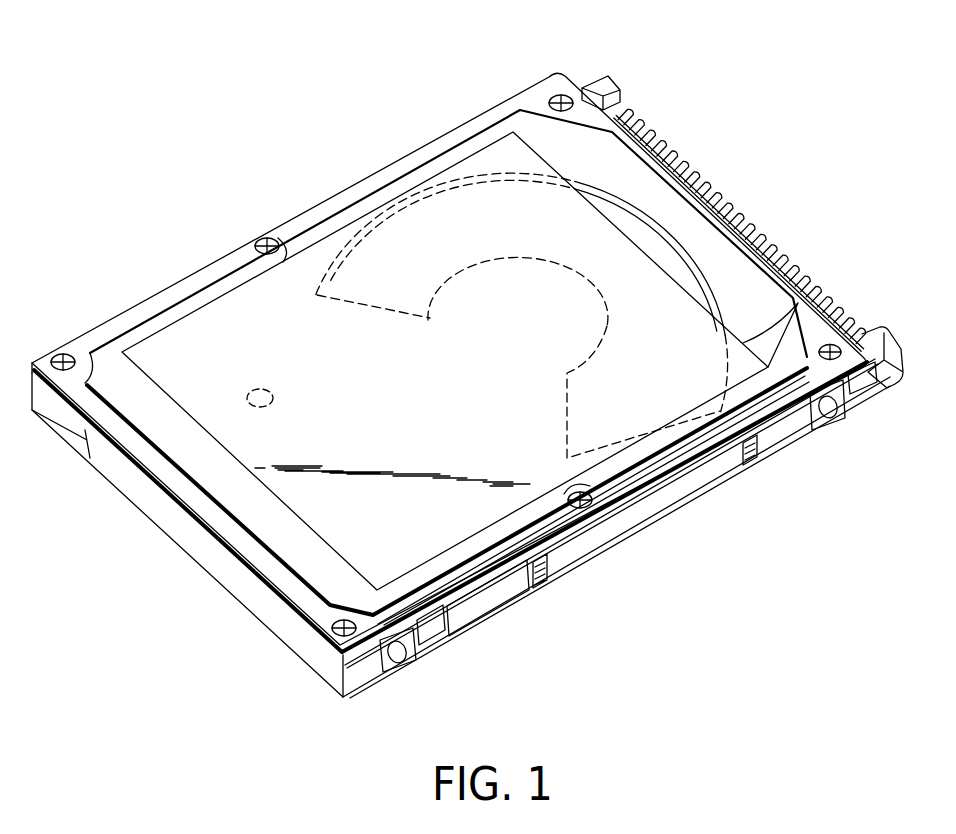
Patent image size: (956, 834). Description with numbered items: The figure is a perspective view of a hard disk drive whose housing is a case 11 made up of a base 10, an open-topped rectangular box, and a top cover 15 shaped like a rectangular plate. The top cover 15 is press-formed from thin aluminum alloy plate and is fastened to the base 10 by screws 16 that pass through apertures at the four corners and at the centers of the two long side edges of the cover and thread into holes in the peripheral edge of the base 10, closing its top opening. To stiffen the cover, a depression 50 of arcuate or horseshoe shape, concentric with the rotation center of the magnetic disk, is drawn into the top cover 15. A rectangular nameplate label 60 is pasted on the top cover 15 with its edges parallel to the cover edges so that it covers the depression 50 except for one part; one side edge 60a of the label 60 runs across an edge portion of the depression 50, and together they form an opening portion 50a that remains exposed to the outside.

The base 10 is at (678, 488).
The case 11 is at (320, 190).
The top cover 15 is at (128, 318).
The screws 16 is at (550, 98).
The depression 50 is at (425, 222).
The opening portion 50a is at (675, 257).
The nameplate label 60 is at (227, 323).
The side edge 60a is at (810, 275).